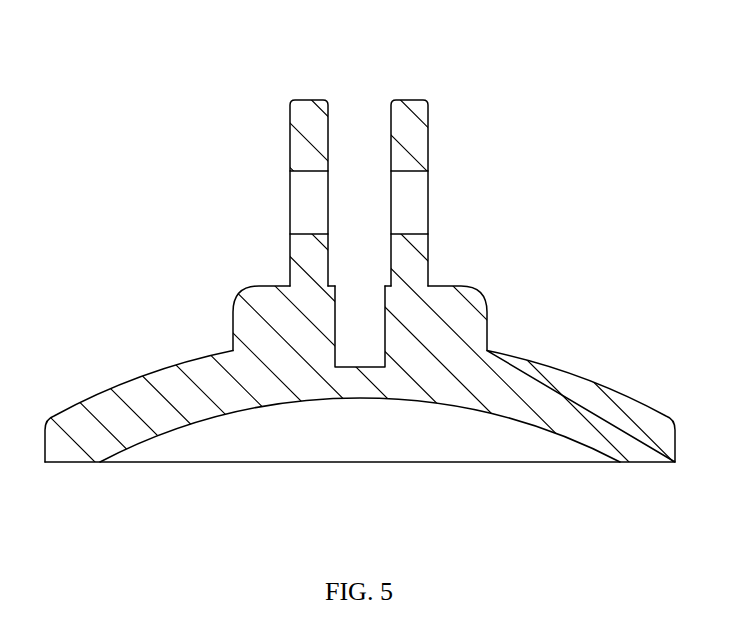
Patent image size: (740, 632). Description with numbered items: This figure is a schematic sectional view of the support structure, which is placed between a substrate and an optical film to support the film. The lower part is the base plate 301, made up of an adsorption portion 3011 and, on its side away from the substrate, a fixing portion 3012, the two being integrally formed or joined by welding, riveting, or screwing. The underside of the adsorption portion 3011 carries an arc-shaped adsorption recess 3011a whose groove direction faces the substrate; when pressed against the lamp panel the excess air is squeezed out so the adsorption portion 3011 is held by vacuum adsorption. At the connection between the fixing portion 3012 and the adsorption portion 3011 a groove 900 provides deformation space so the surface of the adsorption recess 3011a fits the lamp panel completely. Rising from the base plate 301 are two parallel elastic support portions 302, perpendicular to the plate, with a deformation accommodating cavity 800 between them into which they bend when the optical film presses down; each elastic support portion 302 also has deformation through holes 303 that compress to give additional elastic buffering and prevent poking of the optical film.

The deformation accommodating cavity 800 is at (360, 116).
The elastic support portion 302 is at (310, 130).
The deformation through hole 303 is at (308, 205).
The base plate 301 is at (100, 272).
The fixing portion 3012 is at (237, 302).
The adsorption portion 3011 is at (212, 377).
The adsorption recess 3011a is at (367, 431).
The groove 900 is at (361, 333).